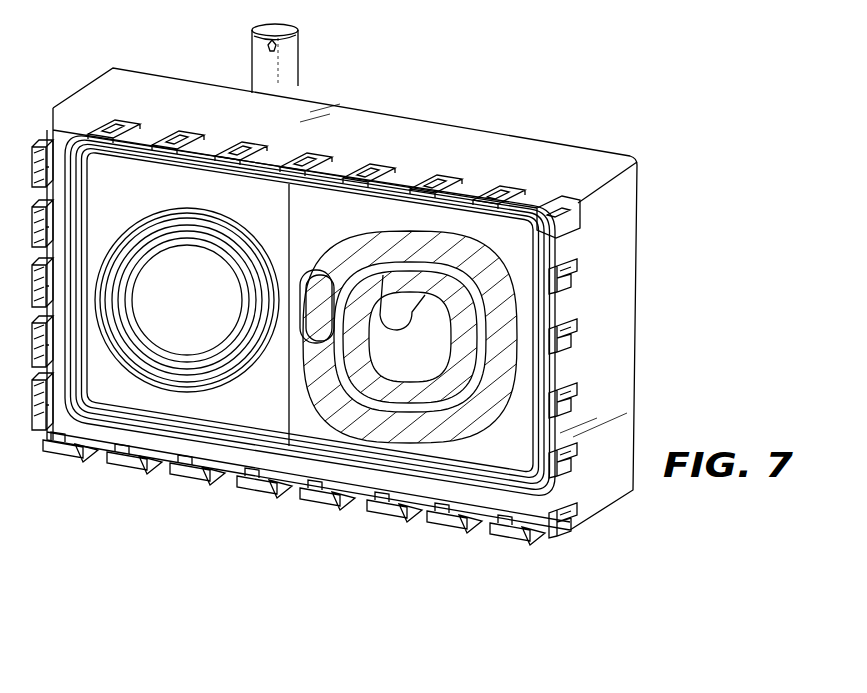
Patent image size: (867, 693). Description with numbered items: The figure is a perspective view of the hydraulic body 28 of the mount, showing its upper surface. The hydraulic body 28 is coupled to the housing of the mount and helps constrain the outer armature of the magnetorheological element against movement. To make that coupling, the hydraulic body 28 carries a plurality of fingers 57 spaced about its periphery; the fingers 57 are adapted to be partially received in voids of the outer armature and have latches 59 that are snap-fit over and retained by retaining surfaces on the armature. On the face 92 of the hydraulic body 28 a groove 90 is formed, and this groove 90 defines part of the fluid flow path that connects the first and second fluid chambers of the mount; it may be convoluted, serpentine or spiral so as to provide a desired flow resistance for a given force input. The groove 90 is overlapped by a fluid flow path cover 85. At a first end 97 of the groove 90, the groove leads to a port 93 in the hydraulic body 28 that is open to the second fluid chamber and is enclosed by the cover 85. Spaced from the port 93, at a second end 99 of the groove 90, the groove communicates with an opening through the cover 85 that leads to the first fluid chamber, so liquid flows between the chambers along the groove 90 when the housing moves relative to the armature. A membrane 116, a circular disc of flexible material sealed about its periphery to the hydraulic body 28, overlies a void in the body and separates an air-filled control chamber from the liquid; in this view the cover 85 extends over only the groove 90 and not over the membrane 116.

The hydraulic body 28 is at (656, 210).
The fingers 57 is at (507, 511).
The latches 59 is at (370, 502).
The fluid flow path cover 85 is at (307, 425).
The groove 90 is at (507, 347).
The face 92 is at (227, 422).
The port 93 is at (440, 284).
The first end of the groove 97 is at (402, 290).
The second end of the groove 99 is at (318, 278).
The membrane 116 is at (180, 323).